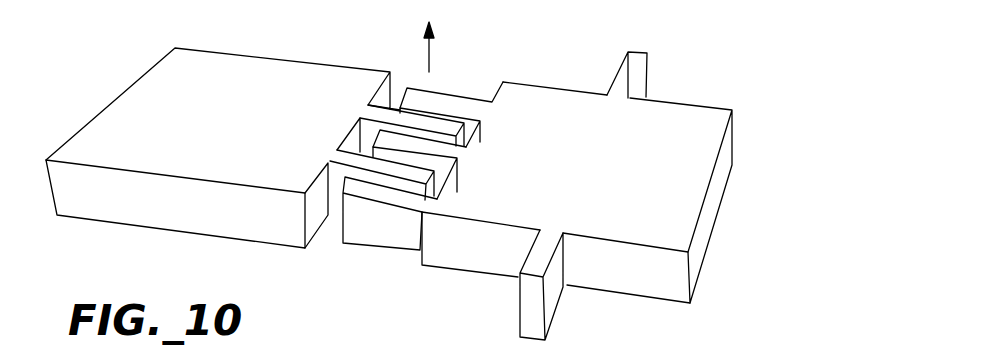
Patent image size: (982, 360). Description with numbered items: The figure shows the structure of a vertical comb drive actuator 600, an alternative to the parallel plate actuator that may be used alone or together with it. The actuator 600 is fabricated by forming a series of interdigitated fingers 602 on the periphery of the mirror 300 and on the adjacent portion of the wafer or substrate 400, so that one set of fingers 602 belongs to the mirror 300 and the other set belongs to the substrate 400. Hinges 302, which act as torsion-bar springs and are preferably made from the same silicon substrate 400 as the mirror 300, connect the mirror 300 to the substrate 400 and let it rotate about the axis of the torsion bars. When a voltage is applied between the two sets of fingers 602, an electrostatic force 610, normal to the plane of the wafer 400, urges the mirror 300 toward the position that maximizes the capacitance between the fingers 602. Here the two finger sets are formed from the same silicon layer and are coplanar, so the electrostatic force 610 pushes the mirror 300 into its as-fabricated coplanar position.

The vertical comb drive actuator 600 is at (455, 174).
The substrate 400 is at (185, 67).
The mirror 300 is at (618, 217).
The hinges 302 is at (636, 52).
The interdigitated fingers 602 is at (397, 110).
The electrostatic force 610 is at (433, 53).